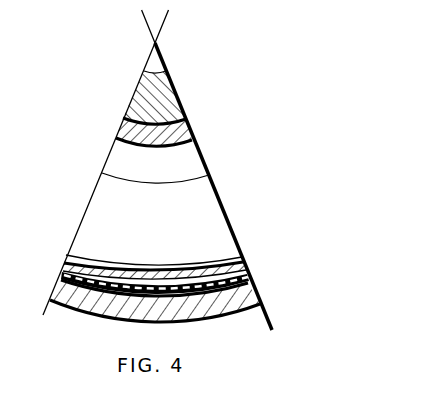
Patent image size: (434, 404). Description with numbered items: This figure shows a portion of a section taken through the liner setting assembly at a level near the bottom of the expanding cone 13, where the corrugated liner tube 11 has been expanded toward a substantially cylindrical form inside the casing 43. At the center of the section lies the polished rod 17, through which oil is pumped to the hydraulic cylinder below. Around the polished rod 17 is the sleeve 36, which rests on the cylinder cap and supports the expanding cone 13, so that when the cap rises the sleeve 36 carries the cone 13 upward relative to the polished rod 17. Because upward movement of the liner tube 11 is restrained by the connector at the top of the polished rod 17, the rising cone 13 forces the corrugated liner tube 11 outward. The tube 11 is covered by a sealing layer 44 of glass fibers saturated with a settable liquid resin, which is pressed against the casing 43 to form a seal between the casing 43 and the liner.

The corrugated liner tube 11 is at (244, 261).
The expanding cone 13 is at (223, 200).
The polished rod 17 is at (175, 85).
The sleeve 36 is at (190, 125).
The casing 43 is at (252, 294).
The sealing layer 44 is at (248, 277).